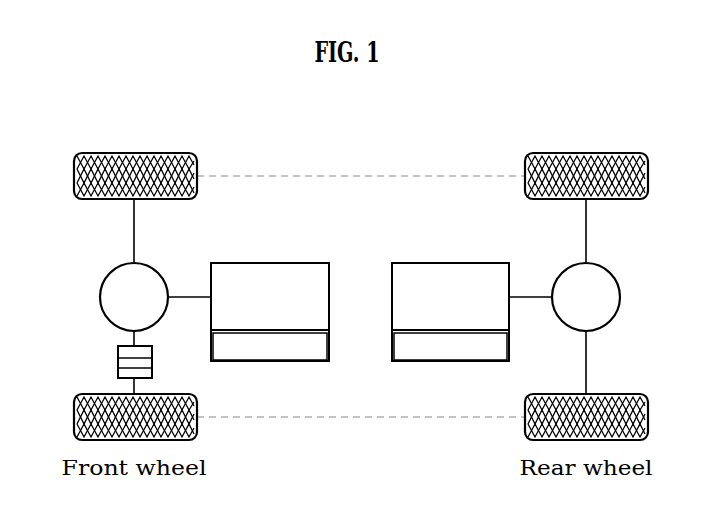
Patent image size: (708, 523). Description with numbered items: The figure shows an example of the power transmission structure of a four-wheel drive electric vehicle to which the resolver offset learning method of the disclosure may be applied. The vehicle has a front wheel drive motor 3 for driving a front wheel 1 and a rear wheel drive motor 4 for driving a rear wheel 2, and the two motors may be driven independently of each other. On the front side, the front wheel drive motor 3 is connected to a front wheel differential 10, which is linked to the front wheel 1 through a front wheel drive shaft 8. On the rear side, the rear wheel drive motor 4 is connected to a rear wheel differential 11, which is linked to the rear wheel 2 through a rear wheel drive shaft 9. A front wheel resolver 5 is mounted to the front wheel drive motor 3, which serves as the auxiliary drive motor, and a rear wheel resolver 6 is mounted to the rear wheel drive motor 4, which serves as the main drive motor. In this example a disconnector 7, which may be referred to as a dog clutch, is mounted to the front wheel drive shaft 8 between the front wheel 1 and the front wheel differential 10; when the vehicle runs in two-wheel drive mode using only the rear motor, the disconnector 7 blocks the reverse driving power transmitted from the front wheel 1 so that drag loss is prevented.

The front wheel 1 is at (139, 153).
The rear wheel 2 is at (582, 153).
The front wheel drive motor 3 is at (300, 263).
The rear wheel drive motor 4 is at (435, 263).
The front wheel resolver 5 is at (300, 361).
The rear wheel resolver 6 is at (432, 361).
The disconnector 7 is at (117, 362).
The front wheel drive shaft 8 is at (134, 233).
The rear wheel drive shaft 9 is at (586, 236).
The front wheel differential 10 is at (100, 290).
The rear wheel differential 11 is at (617, 315).